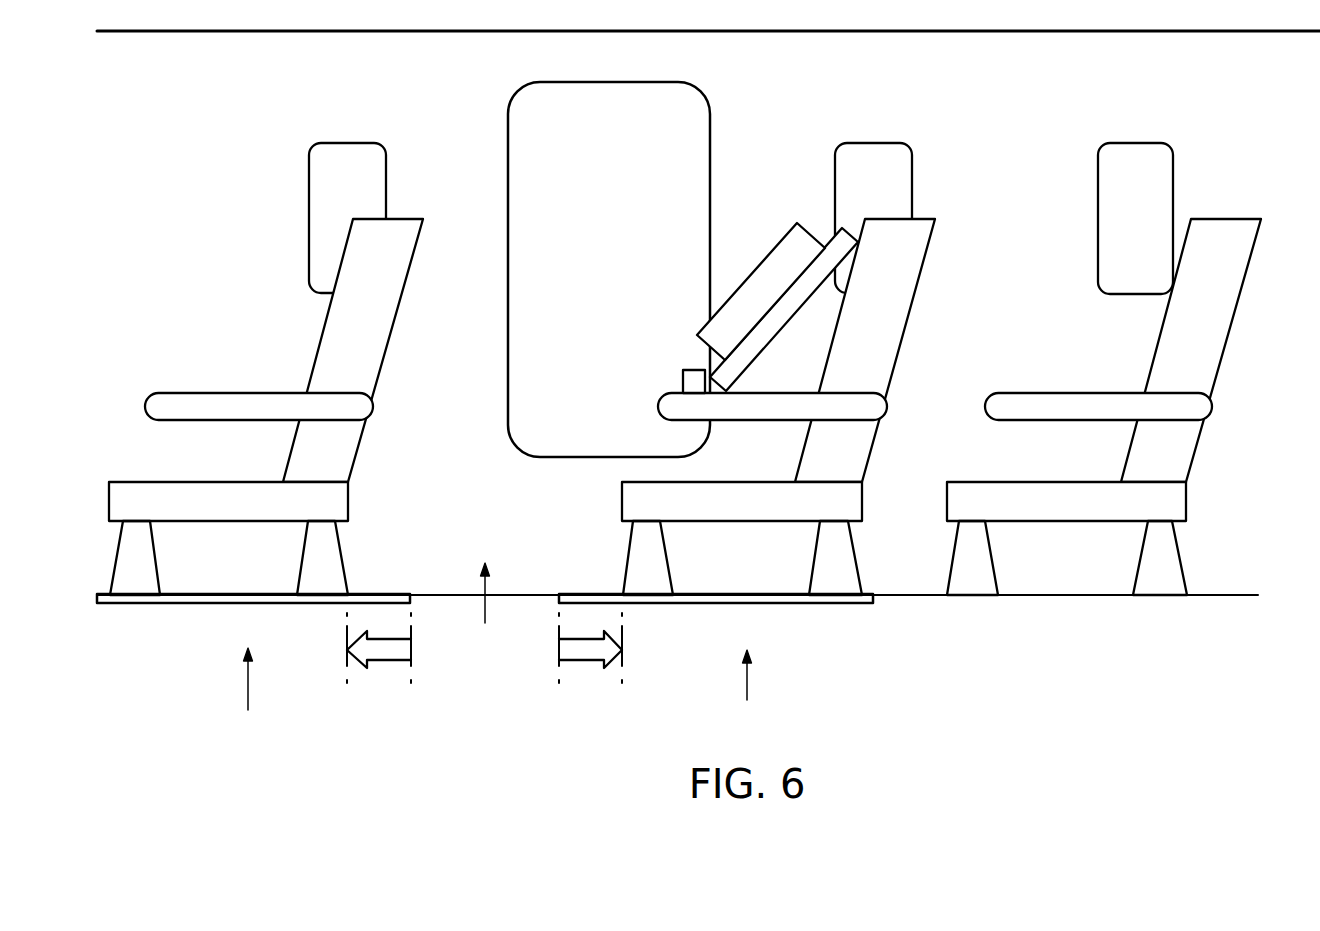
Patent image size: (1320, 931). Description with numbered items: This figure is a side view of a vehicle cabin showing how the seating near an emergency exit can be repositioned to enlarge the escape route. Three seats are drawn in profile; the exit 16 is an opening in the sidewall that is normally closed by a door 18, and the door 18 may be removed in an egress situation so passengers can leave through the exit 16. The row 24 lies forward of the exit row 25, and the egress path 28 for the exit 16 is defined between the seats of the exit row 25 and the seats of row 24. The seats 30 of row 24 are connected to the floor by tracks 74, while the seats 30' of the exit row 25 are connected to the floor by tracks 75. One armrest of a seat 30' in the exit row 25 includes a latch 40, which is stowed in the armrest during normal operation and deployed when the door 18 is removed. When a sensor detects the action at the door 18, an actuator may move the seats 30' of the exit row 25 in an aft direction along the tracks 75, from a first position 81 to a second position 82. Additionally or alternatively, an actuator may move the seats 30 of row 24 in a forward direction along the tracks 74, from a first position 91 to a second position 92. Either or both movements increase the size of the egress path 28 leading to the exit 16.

The exit 16 is at (711, 126).
The door 18 is at (776, 210).
The row 24 is at (248, 697).
The exit row 25 is at (747, 697).
The egress path 28 is at (485, 610).
The seat 30 is at (266, 369).
The seat 30' is at (823, 369).
The latch 40 is at (683, 374).
The tracks 74 is at (188, 604).
The tracks 75 is at (827, 603).
The first position 81 is at (558, 667).
The second position 82 is at (597, 667).
The first position 91 is at (408, 667).
The second position 92 is at (372, 667).